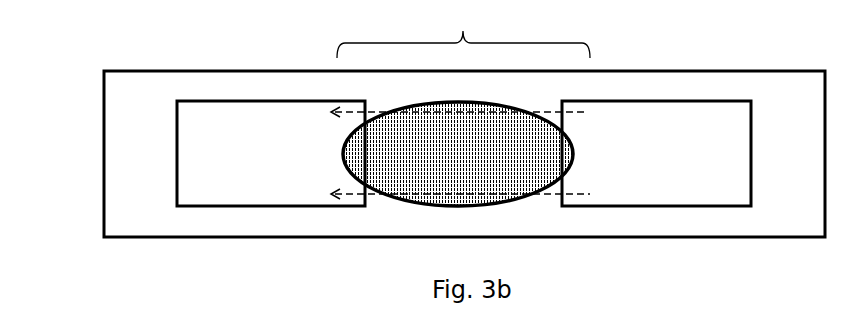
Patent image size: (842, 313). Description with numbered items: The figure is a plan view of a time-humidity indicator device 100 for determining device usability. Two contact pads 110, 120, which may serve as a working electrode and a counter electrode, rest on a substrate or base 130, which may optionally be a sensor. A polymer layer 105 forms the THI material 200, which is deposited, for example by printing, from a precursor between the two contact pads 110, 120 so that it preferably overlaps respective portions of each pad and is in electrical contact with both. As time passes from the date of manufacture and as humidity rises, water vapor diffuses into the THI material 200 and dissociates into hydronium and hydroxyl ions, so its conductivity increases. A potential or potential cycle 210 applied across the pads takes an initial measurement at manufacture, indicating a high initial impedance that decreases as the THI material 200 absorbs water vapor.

The THI device 100 is at (98, 60).
The polymer layer 105 is at (463, 31).
The contact pad 110 is at (198, 143).
The contact pad 120 is at (738, 153).
The substrate or base 130 is at (123, 205).
The THI material 200 is at (470, 177).
The potential or potential cycle 210 is at (574, 110).